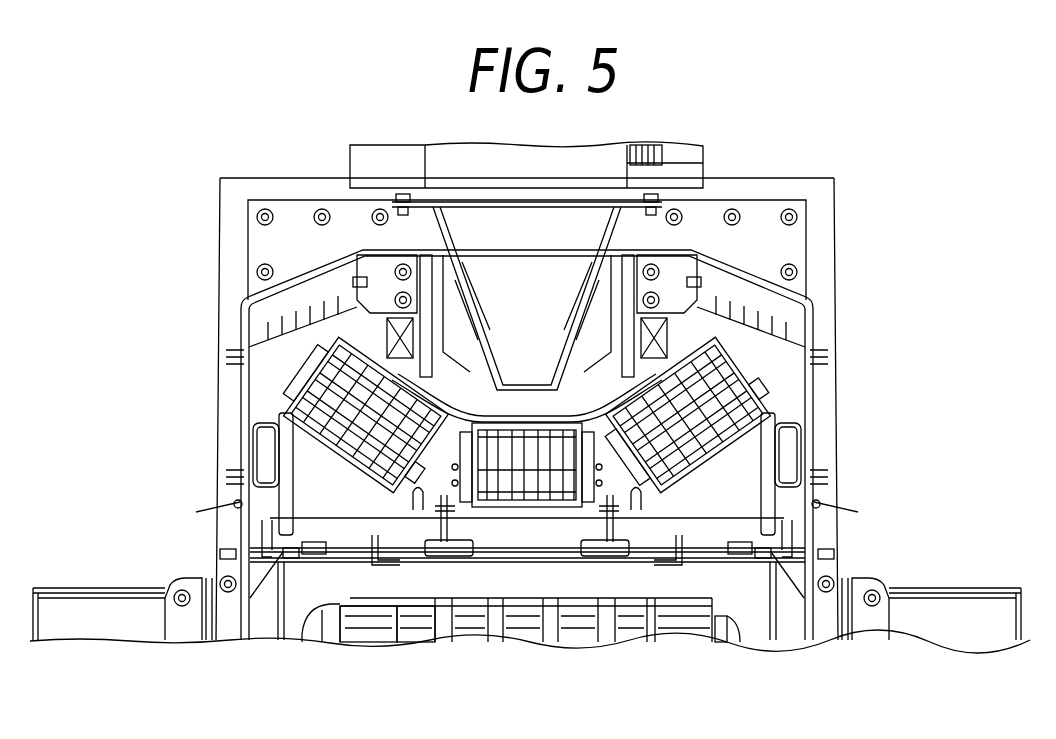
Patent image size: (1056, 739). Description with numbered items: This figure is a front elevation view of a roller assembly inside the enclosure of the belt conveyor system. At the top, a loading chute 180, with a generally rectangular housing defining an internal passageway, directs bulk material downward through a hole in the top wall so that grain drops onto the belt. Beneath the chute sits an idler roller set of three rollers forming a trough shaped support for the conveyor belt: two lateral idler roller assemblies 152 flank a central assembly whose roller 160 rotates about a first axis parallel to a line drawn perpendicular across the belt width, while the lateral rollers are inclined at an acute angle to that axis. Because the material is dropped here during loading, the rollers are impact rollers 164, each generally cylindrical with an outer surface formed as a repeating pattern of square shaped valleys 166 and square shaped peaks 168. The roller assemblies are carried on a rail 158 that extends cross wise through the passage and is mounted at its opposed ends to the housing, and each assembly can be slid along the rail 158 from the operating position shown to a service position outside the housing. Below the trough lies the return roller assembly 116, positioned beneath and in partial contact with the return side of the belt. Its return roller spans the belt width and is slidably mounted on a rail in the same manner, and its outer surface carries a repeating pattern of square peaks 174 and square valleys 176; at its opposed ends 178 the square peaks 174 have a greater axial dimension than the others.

The return roller assembly 116 is at (638, 645).
The lateral idler roller assembly 152 is at (288, 372).
The rail 158 is at (528, 518).
The roller 160 is at (495, 556).
The impact roller 164 is at (730, 374).
The square shaped valley 166 is at (497, 560).
The square shaped peak 168 is at (482, 425).
The square peak 174 is at (367, 620).
The square valley 176 is at (417, 630).
The opposed end 178 is at (315, 606).
The loading chute 180 is at (748, 487).